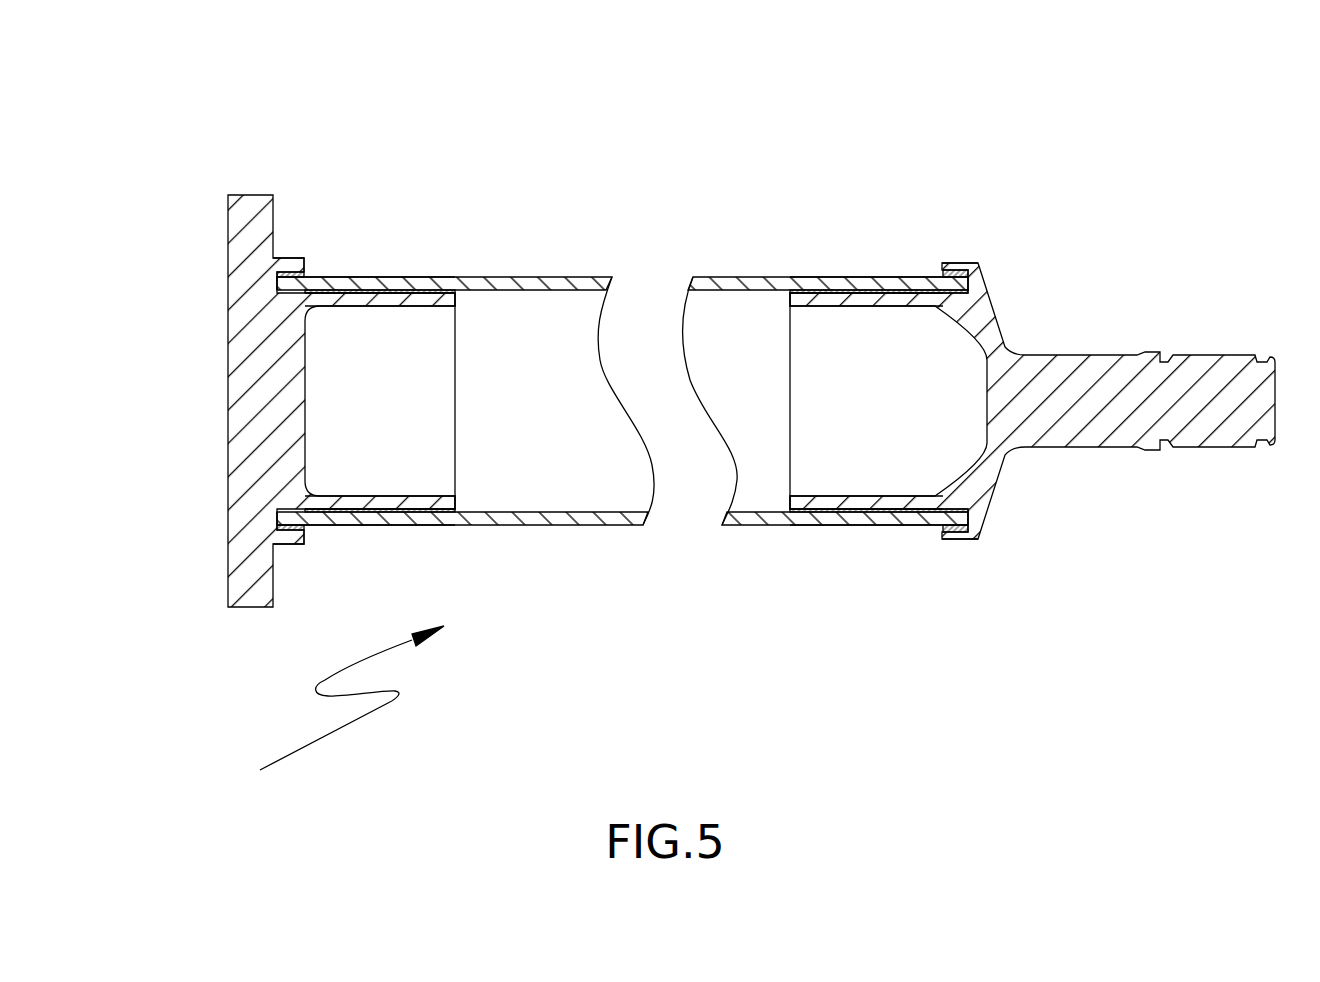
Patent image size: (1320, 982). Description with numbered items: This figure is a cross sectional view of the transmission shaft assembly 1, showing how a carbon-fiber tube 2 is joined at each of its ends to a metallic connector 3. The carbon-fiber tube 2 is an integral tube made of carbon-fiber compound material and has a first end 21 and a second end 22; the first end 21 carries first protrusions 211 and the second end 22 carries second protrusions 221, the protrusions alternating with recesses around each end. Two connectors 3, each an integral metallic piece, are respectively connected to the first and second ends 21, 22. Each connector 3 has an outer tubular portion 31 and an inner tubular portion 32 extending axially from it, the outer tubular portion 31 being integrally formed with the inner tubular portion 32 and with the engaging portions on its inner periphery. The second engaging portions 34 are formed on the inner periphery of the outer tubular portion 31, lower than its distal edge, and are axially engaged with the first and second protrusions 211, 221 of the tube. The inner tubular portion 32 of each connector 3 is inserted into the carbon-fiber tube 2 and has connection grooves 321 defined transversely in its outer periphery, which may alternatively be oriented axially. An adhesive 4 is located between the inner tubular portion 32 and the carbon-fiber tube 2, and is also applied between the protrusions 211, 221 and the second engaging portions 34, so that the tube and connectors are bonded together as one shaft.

The transmission shaft assembly 1 is at (339, 709).
The carbon-fiber tube 2 is at (578, 520).
The first end 21 is at (340, 283).
The first protrusions 211 is at (287, 283).
The second end 22 is at (913, 288).
The second protrusions 221 is at (950, 278).
The connectors 3 is at (240, 447).
The outer tubular portion 31 is at (303, 274).
The inner tubular portion 32 is at (396, 305).
The connection grooves 321 is at (426, 293).
The second engaging portions 34 is at (279, 277).
The adhesive 4 is at (365, 290).